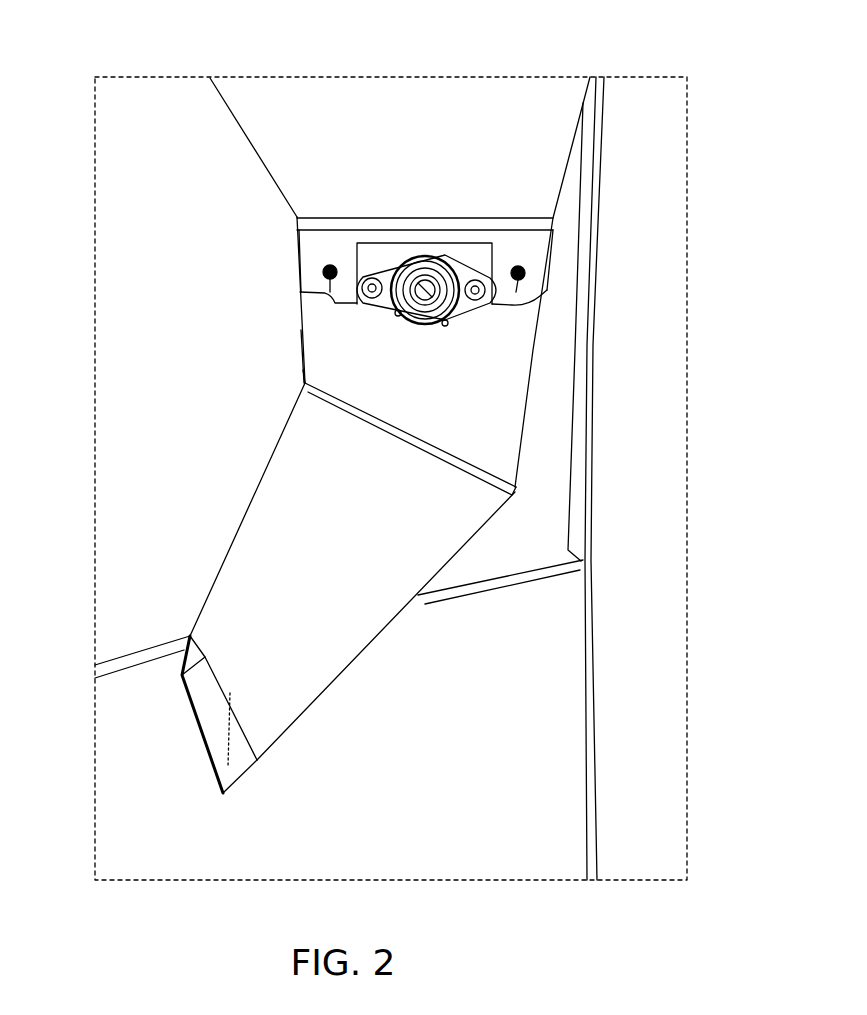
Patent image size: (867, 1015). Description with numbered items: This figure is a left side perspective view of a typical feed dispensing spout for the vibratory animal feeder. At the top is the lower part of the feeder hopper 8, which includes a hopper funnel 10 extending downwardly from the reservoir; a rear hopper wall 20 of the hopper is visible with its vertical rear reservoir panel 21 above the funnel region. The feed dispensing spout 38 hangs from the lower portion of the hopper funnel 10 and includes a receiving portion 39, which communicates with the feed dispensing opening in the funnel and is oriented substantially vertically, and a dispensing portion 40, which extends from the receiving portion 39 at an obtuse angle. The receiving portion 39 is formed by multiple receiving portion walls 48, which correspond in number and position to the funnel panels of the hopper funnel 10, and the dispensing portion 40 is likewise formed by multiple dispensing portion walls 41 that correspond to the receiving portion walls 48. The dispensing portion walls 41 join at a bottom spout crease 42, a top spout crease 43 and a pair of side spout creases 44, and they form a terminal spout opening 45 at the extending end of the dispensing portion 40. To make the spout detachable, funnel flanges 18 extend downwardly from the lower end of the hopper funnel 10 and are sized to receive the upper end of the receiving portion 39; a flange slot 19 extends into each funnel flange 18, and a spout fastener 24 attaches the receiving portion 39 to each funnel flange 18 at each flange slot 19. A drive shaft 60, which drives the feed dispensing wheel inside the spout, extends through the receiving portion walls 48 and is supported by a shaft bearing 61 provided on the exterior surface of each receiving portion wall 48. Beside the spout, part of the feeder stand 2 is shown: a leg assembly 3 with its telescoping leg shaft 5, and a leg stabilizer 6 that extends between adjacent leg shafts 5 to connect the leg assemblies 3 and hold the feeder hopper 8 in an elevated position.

The feeder stand 2 is at (645, 331).
The leg assembly 3 is at (606, 436).
The leg shaft 5 is at (576, 503).
The leg stabilizer 6 is at (585, 640).
The feeder hopper 8 is at (172, 104).
The hopper funnel 10 is at (250, 166).
The funnel flange 18 is at (307, 260).
The flange slot 19 is at (327, 295).
The rear hopper wall 20 is at (467, 97).
The rear reservoir panel 21 is at (354, 142).
The spout fastener 24 is at (331, 268).
The feed dispensing spout 38 is at (290, 337).
The receiving portion 39 is at (305, 375).
The dispensing portion 40 is at (240, 498).
The dispensing portion wall 41 is at (180, 660).
The bottom spout crease 42 is at (217, 760).
The top spout crease 43 is at (198, 652).
The side spout crease 44 is at (200, 658).
The terminal spout opening 45 is at (196, 716).
The receiving portion wall 48 is at (300, 346).
The drive shaft 60 is at (427, 287).
The shaft bearing 61 is at (397, 313).